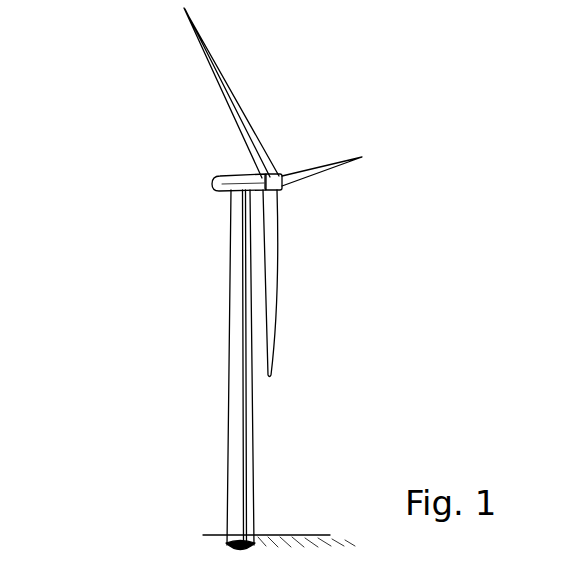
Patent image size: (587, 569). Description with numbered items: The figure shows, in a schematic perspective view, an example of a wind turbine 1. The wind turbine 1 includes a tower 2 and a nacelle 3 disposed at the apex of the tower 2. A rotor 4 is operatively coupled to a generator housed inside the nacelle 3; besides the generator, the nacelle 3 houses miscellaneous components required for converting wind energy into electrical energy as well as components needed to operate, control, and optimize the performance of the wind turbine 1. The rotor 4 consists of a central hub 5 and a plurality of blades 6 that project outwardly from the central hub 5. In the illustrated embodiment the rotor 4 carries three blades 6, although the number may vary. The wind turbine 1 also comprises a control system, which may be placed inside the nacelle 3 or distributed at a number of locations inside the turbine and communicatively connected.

The wind turbine 1 is at (96, 141).
The tower 2 is at (237, 306).
The nacelle 3 is at (225, 180).
The rotor 4 is at (345, 252).
The central hub 5 is at (273, 176).
The blades 6 is at (232, 100).